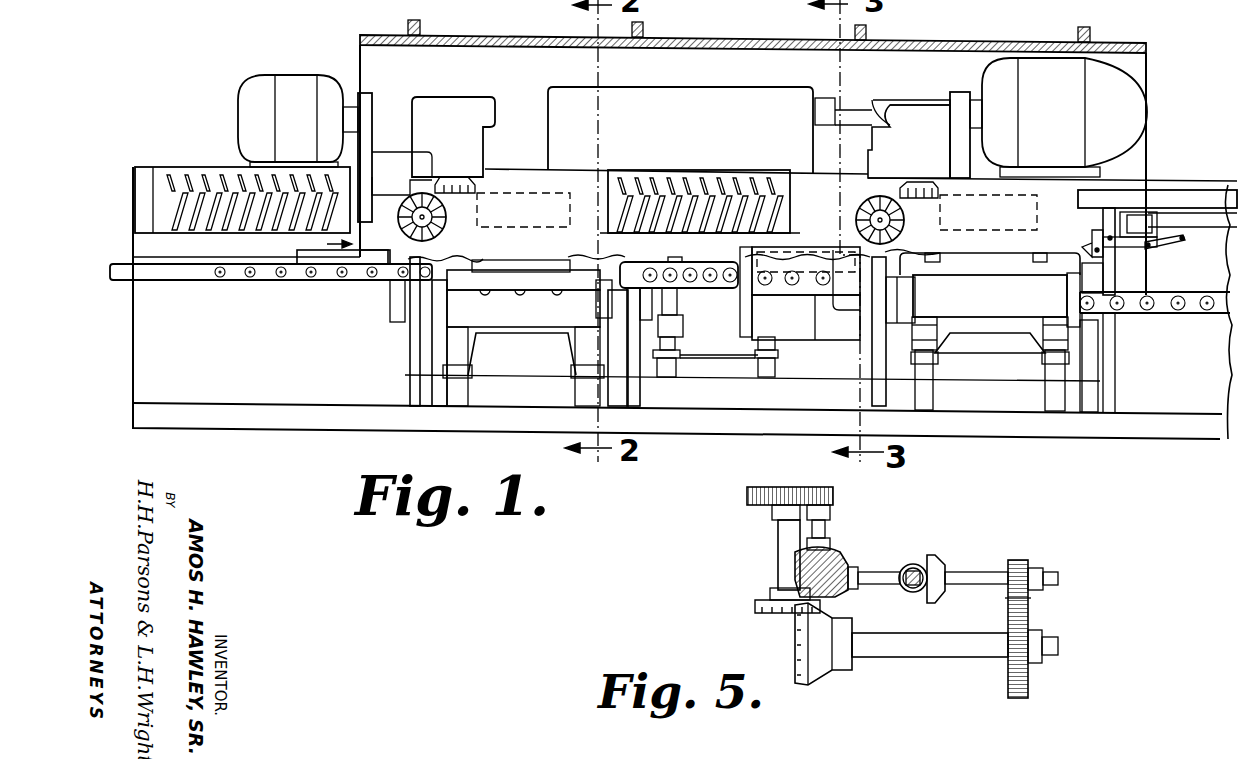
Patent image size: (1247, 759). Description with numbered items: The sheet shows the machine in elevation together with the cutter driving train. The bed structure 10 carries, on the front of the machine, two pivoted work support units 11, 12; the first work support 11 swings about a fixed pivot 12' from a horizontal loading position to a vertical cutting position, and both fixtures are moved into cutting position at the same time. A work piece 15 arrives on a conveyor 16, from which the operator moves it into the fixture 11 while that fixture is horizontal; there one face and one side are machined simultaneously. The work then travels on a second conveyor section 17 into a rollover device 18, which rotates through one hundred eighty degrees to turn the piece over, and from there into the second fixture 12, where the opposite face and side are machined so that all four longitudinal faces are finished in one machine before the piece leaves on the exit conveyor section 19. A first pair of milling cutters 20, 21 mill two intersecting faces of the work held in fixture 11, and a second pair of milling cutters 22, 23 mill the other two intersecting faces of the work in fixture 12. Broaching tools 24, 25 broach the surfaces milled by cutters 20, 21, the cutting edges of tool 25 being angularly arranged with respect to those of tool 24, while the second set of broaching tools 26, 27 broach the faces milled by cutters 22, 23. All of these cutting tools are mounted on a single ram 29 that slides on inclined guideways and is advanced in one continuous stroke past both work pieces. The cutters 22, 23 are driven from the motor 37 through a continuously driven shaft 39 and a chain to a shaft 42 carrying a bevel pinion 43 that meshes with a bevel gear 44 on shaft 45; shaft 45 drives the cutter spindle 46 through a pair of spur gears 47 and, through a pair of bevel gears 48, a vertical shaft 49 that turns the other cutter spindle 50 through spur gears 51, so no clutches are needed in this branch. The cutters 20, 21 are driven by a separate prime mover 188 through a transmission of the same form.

In FIG. 1, the bed structure 10 is at (280, 400).
In FIG. 1, the pivoted work support unit 11 is at (505, 328).
In FIG. 1, the pivoted work support unit 12 is at (999, 357).
In FIG. 1, the fixed pivot 12' is at (893, 331).
In FIG. 1, the work piece 15 is at (305, 252).
In FIG. 1, the conveyor 16 is at (274, 282).
In FIG. 1, the second conveyor section 17 is at (712, 290).
In FIG. 1, the rollover device 18 is at (779, 288).
In FIG. 1, the exit conveyor section 19 is at (1163, 312).
In FIG. 1, the milling cutter 20 is at (447, 236).
In FIG. 1, the milling cutter 21 is at (457, 195).
In FIG. 1, the milling cutter 22 is at (904, 236).
In FIG. 5, the milling cutter 22 is at (803, 684).
In FIG. 1, the milling cutter 23 is at (918, 200).
In FIG. 5, the milling cutter 23 is at (757, 608).
In FIG. 1, the broaching tool 24 is at (212, 226).
In FIG. 1, the broaching tool 25 is at (205, 182).
In FIG. 1, the broaching tool 26 is at (692, 224).
In FIG. 1, the broaching tool 27 is at (717, 183).
In FIG. 1, the ram 29 is at (517, 172).
In FIG. 1, the motor 37 is at (1135, 127).
In FIG. 1, the shaft 39 is at (855, 108).
In FIG. 1, the prime mover 188 is at (289, 80).
In FIG. 5, the shaft 42 is at (913, 590).
In FIG. 5, the bevel pinion 43 is at (908, 563).
In FIG. 5, the bevel gear 44 is at (936, 556).
In FIG. 5, the shaft 45 is at (968, 572).
In FIG. 5, the cutter spindle 46 is at (942, 657).
In FIG. 5, the spur gears 47 is at (1028, 603).
In FIG. 5, the bevel gears 48 is at (840, 550).
In FIG. 5, the vertical shaft 49 is at (826, 530).
In FIG. 5, the cutter spindle 50 is at (780, 565).
In FIG. 5, the spur gears 51 is at (800, 487).